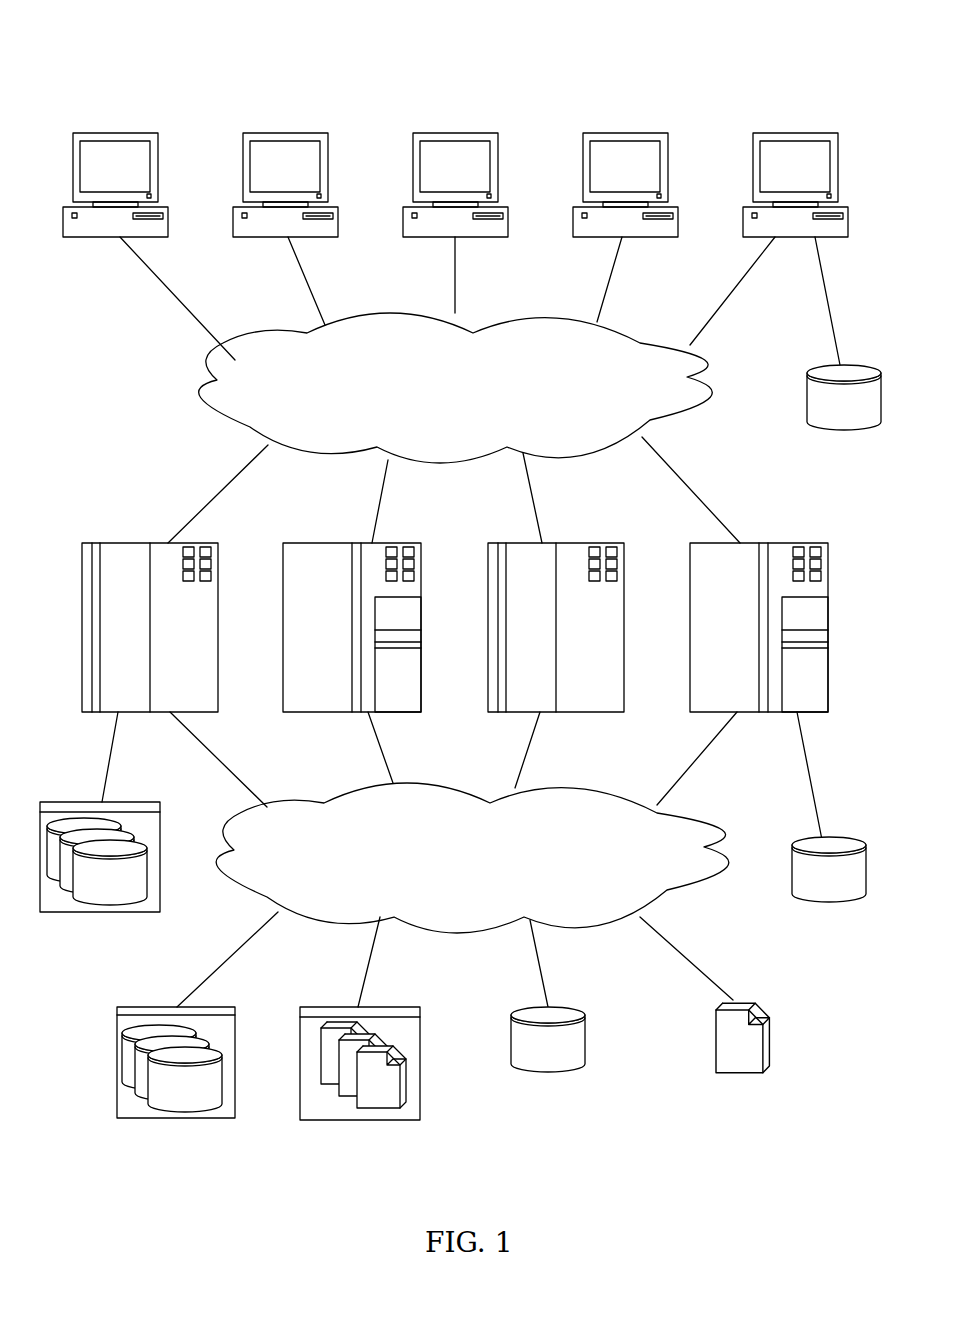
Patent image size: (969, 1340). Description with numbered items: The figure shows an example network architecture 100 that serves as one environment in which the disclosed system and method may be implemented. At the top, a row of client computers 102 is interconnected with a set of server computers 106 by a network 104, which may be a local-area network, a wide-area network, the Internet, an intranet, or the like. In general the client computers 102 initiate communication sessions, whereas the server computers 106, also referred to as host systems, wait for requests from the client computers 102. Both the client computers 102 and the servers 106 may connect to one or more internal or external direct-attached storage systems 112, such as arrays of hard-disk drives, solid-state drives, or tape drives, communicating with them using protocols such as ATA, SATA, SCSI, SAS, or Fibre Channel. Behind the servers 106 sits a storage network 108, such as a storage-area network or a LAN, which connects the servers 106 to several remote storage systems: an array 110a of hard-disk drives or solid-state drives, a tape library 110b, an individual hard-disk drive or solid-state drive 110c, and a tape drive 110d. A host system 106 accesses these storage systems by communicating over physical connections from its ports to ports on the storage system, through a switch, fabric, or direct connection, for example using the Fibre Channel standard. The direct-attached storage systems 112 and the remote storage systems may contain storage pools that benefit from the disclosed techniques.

The network architecture 100 is at (186, 66).
The client computer 102 is at (455, 185).
The network 104 is at (627, 403).
The server computer 106 is at (455, 627).
The storage network 108 is at (609, 871).
The array of hard-disk drives or solid-state drives 110a is at (175, 1118).
The tape library 110b is at (360, 1120).
The individual hard-disk drive or solid-state drive 110c is at (548, 1063).
The tape drive 110d is at (737, 1073).
The direct-attached storage system 112 is at (843, 422).